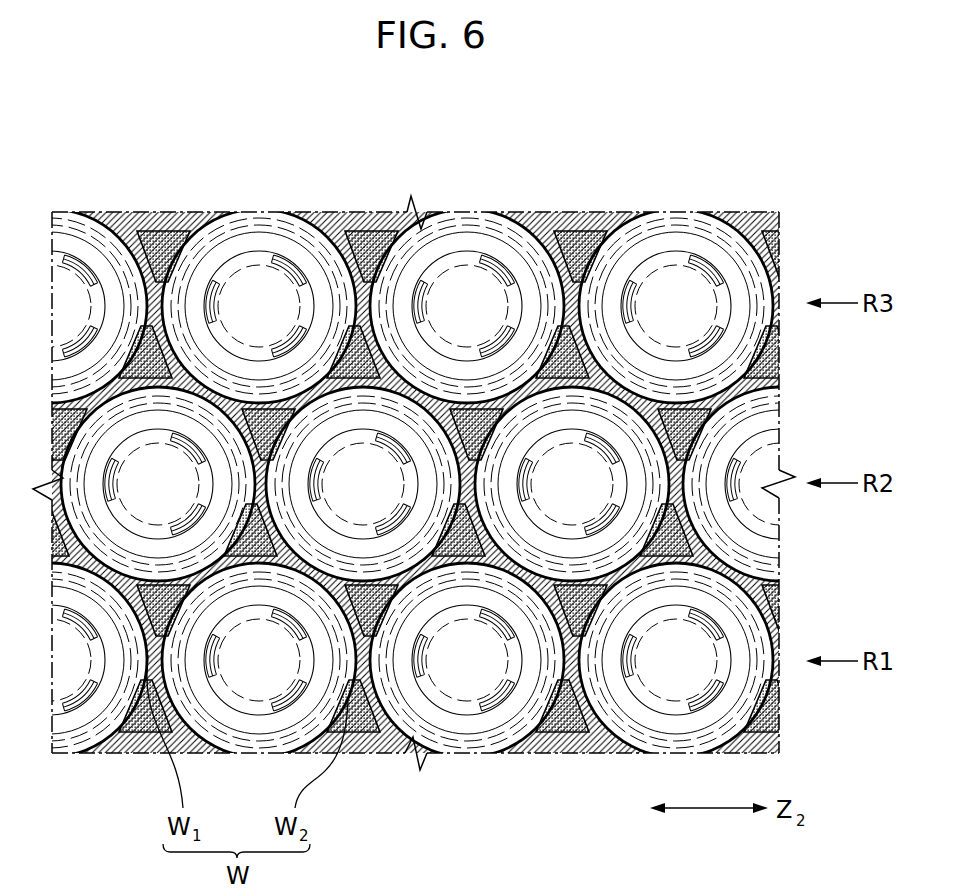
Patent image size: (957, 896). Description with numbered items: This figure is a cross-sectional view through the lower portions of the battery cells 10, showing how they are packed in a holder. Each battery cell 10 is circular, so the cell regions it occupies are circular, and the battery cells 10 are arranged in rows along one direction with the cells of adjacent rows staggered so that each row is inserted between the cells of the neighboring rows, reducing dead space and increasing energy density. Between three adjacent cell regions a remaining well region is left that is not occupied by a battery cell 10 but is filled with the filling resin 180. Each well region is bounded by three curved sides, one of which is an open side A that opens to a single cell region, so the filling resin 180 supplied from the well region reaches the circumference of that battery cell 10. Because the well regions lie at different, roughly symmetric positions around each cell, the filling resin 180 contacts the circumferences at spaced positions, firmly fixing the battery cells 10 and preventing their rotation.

The battery cell 10 is at (232, 243).
The filling resin 180 is at (375, 246).
The open side A is at (142, 602).